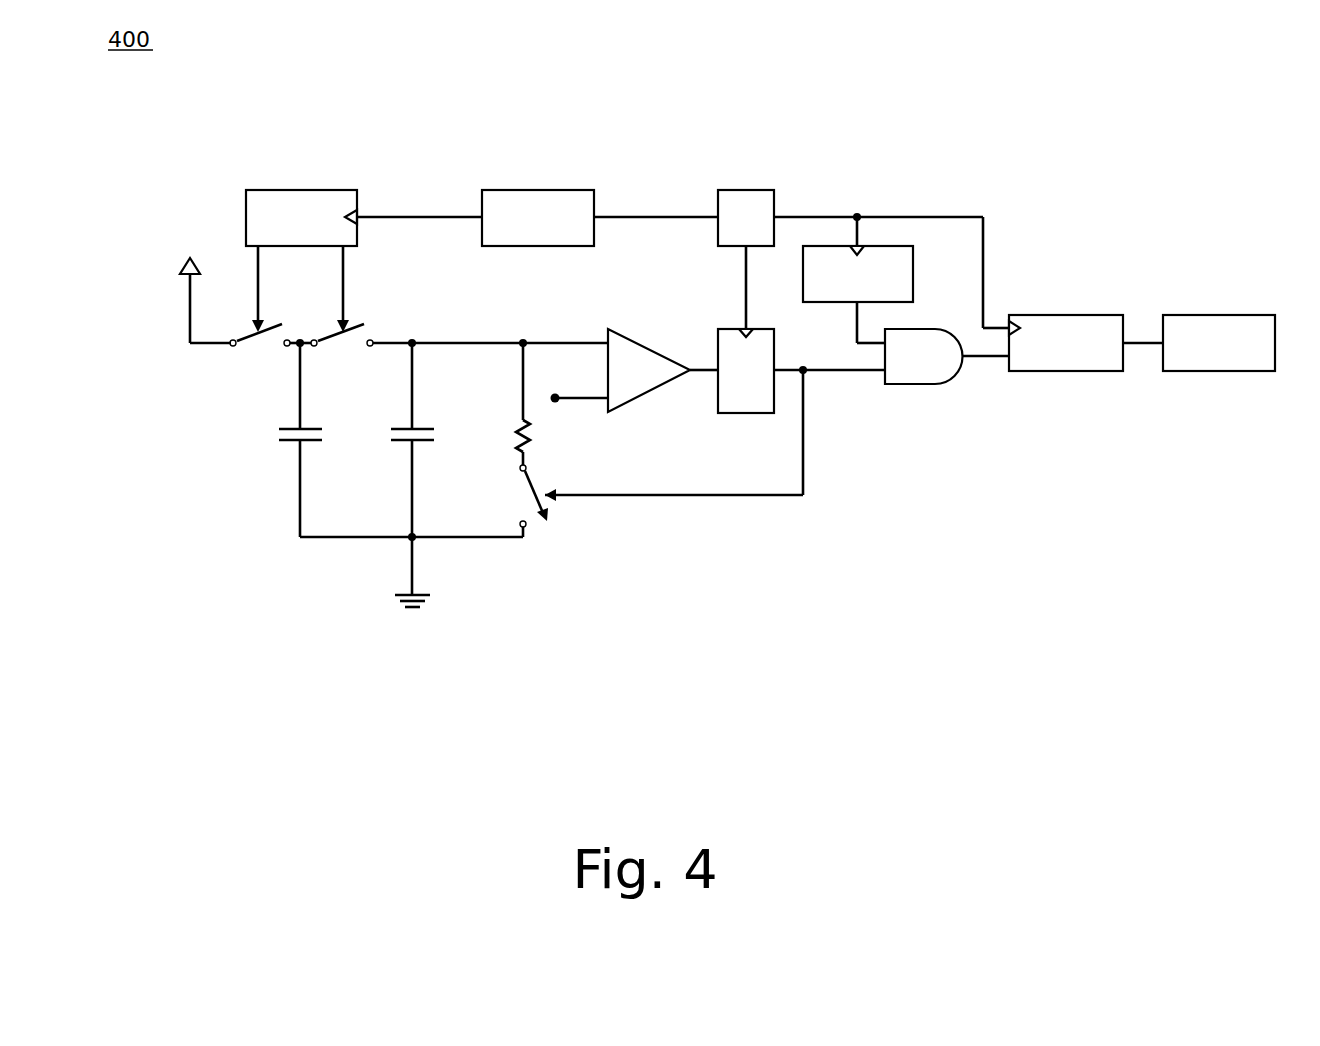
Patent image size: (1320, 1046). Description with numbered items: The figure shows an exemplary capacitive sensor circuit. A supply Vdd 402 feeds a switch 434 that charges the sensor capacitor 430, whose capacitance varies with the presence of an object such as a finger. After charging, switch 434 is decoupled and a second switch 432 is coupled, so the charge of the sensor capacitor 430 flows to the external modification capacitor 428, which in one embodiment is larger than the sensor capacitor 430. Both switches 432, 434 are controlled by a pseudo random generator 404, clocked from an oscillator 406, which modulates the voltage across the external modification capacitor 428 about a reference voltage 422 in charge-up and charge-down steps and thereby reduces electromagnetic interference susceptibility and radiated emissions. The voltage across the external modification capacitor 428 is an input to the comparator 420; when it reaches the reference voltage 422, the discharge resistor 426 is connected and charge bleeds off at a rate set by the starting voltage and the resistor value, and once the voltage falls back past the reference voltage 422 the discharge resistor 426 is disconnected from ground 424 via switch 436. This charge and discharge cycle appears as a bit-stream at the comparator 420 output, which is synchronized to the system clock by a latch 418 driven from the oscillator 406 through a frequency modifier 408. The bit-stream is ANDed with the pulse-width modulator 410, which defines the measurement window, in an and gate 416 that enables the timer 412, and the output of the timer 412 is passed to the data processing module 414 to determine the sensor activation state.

The Vdd 402 is at (190, 246).
The pseudo random generator 404 is at (305, 190).
The oscillator 406 is at (530, 190).
The frequency modifier 408 is at (740, 190).
The pulse-width modulator 410 is at (913, 275).
The counter 412 is at (1066, 315).
The data processing module 414 is at (1255, 315).
The and gate 416 is at (915, 384).
The latch 418 is at (743, 413).
The comparator 420 is at (645, 338).
The reference voltage 422 is at (556, 400).
The ground signal 424 is at (436, 606).
The discharge resistor 426 is at (472, 447).
The external modification capacitor 428 is at (344, 467).
The sensor capacitor 430 is at (236, 444).
The switch 432 is at (352, 340).
The switch 434 is at (266, 340).
The switch 436 is at (556, 512).